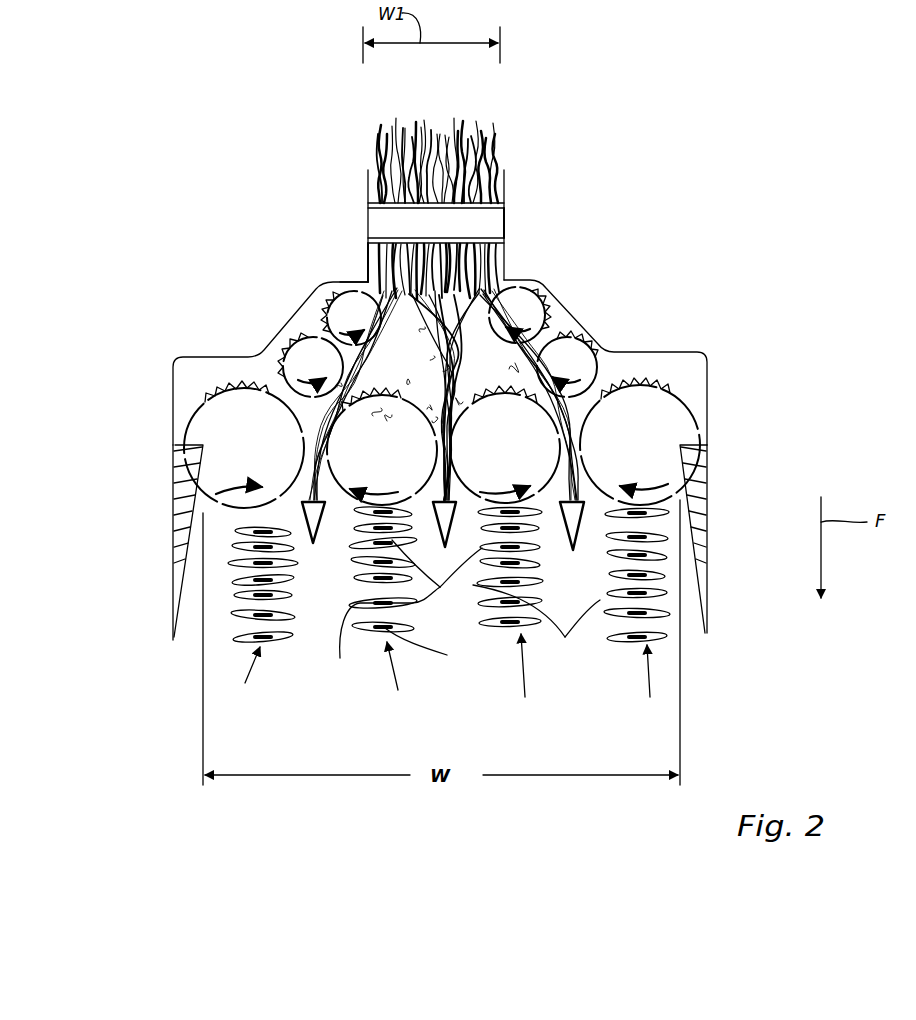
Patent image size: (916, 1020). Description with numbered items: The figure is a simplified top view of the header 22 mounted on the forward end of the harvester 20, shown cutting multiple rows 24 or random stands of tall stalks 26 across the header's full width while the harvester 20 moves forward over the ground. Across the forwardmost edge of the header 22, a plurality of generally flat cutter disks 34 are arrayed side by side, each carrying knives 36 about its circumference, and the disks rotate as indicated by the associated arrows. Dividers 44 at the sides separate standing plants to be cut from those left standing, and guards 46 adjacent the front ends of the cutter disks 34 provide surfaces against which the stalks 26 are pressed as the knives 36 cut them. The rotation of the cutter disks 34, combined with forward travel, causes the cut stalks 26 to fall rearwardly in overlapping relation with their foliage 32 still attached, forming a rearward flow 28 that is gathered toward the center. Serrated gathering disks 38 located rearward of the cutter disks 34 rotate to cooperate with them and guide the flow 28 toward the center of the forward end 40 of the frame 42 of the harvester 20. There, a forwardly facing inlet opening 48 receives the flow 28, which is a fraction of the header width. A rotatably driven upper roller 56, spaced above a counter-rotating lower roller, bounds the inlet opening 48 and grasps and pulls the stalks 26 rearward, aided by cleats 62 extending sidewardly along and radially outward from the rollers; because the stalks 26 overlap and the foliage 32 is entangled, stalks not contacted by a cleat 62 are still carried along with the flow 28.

The harvester 20 is at (803, 180).
The header 22 is at (709, 349).
The rows 24 is at (441, 680).
The stalks 26 is at (383, 163).
The rearward flow 28 is at (508, 150).
The foliage 32 is at (762, 567).
The cutter disks 34 is at (128, 370).
The knives 36 is at (360, 427).
The gathering disks 38 is at (330, 302).
The forward end 40 is at (367, 275).
The frame 42 is at (505, 177).
The dividers 44 is at (170, 573).
The guards 46 is at (313, 545).
The inlet opening 48 is at (368, 257).
The upper roller 56 is at (505, 222).
The cleats 62 is at (505, 203).